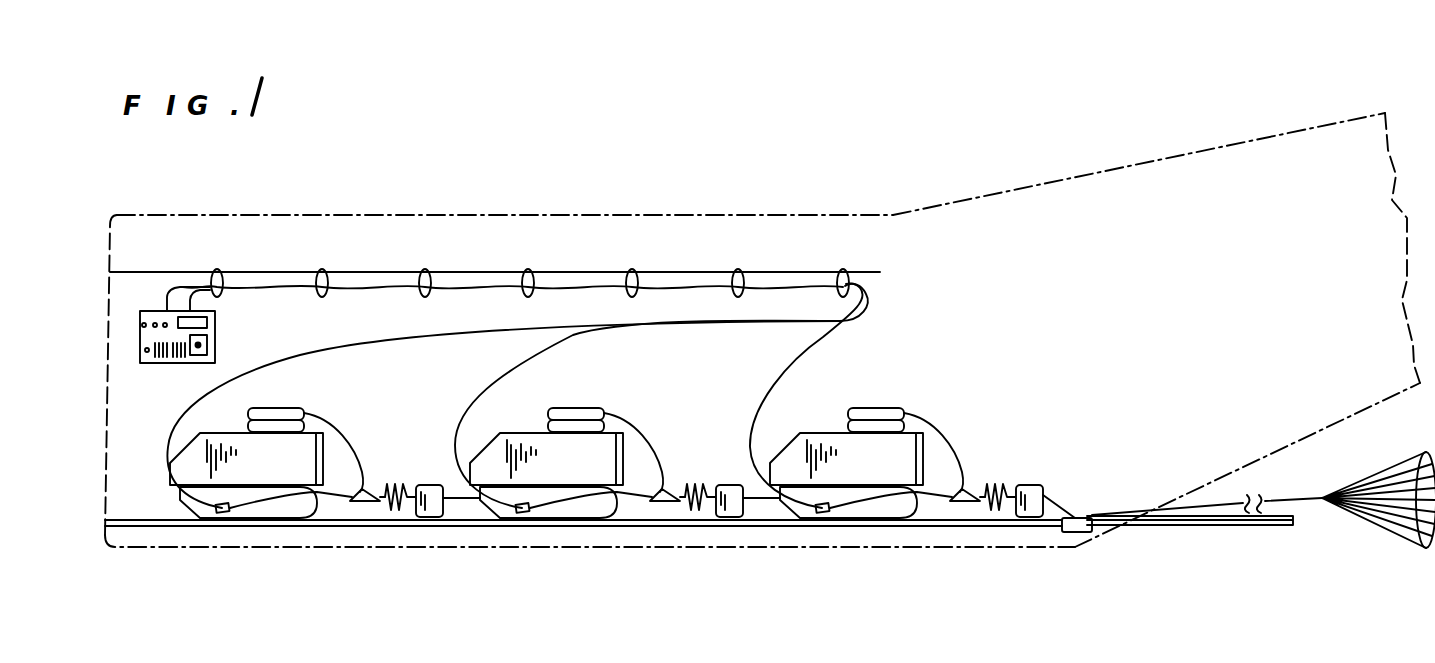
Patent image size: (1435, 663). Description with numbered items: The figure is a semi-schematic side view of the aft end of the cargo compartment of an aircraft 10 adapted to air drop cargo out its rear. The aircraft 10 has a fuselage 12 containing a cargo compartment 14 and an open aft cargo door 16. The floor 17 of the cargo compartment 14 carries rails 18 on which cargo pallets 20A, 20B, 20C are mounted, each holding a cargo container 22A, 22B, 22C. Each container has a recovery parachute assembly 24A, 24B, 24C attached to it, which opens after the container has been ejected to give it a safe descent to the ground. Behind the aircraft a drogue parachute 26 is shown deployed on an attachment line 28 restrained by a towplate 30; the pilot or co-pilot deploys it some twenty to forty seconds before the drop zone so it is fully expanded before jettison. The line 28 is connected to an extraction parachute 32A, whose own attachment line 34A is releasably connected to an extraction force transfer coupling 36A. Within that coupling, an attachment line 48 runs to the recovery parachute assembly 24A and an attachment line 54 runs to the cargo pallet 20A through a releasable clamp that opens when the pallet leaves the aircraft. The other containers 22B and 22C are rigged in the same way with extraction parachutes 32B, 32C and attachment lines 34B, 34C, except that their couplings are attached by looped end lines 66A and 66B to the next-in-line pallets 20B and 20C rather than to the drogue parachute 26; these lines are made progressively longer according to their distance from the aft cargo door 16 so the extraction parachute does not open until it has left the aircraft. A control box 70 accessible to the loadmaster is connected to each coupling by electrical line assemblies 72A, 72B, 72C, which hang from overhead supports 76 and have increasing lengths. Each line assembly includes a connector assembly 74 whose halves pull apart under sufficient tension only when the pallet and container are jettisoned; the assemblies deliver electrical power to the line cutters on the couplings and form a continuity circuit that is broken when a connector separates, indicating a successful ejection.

The aircraft 10 is at (1015, 165).
The fuselage 12 is at (855, 213).
The cargo compartment 14 is at (1100, 313).
The open aft cargo door 16 is at (1363, 412).
The floor 17 is at (132, 508).
The rails 18 is at (330, 527).
The cargo pallet 20A is at (848, 550).
The cargo pallet 20B is at (566, 550).
The cargo pallet 20C is at (265, 518).
The cargo container 22A is at (846, 428).
The cargo container 22B is at (546, 428).
The cargo container 22C is at (228, 433).
The recovery parachute assembly 24A is at (909, 401).
The recovery parachute assembly 24B is at (605, 431).
The recovery parachute assembly 24C is at (298, 408).
The drogue parachute 26 is at (1418, 541).
The attachment line 28 is at (1303, 503).
The towplate 30 is at (1075, 532).
The extraction parachute 32A is at (1070, 463).
The extraction parachute 32B is at (710, 462).
The extraction parachute 32C is at (424, 485).
The attachment line 34A is at (1031, 440).
The attachment line 34B is at (691, 549).
The attachment line 34C is at (386, 510).
The extraction force transfer coupling 36A is at (987, 551).
The attachment line 48 is at (960, 450).
The attachment line 54 is at (891, 553).
The looped end line 66A is at (766, 556).
The looped end line 66B is at (458, 500).
The control box 70 is at (160, 363).
The electrical line assembly 72A is at (829, 396).
The electrical line assembly 72B is at (647, 414).
The electrical line assembly 72C is at (284, 360).
The connector assembly 74 is at (222, 512).
The overhead supports 76 is at (632, 270).